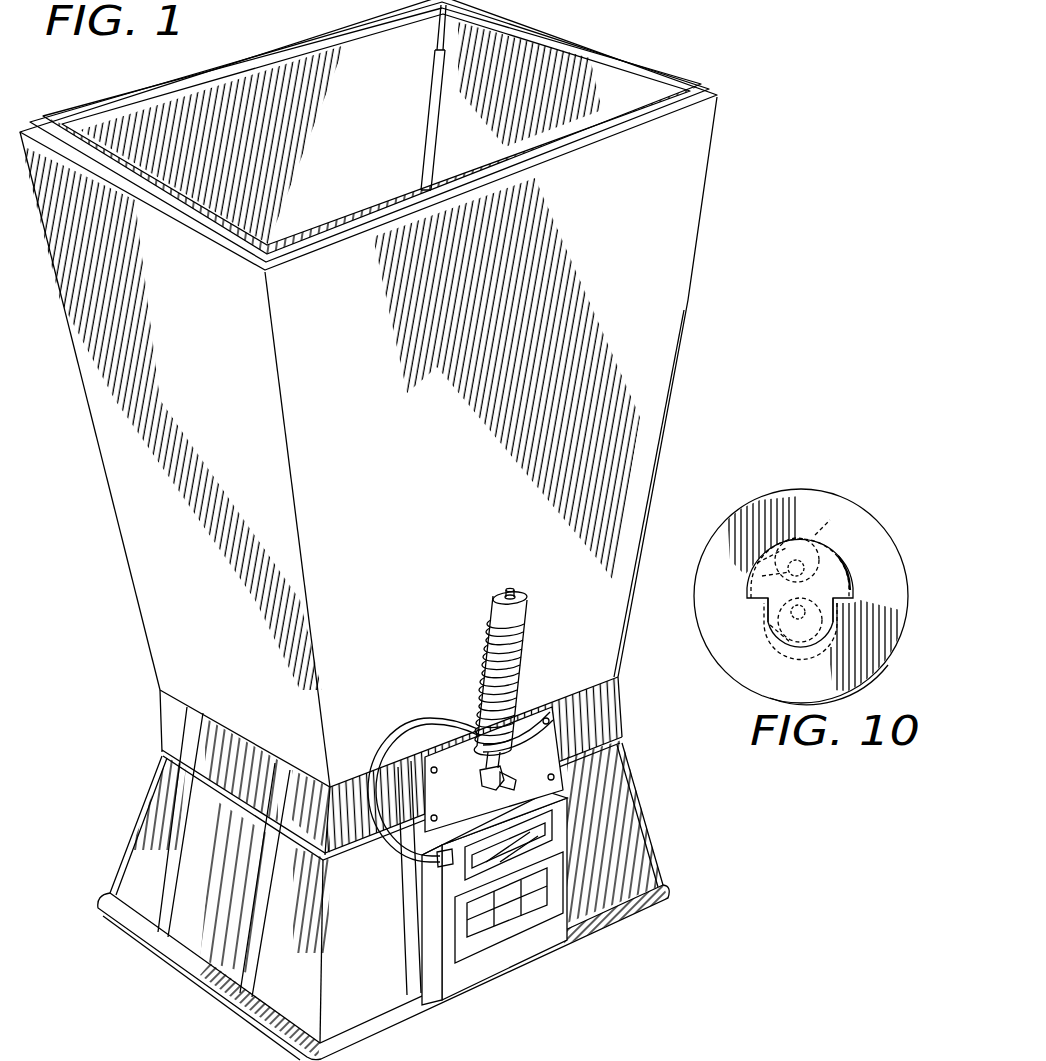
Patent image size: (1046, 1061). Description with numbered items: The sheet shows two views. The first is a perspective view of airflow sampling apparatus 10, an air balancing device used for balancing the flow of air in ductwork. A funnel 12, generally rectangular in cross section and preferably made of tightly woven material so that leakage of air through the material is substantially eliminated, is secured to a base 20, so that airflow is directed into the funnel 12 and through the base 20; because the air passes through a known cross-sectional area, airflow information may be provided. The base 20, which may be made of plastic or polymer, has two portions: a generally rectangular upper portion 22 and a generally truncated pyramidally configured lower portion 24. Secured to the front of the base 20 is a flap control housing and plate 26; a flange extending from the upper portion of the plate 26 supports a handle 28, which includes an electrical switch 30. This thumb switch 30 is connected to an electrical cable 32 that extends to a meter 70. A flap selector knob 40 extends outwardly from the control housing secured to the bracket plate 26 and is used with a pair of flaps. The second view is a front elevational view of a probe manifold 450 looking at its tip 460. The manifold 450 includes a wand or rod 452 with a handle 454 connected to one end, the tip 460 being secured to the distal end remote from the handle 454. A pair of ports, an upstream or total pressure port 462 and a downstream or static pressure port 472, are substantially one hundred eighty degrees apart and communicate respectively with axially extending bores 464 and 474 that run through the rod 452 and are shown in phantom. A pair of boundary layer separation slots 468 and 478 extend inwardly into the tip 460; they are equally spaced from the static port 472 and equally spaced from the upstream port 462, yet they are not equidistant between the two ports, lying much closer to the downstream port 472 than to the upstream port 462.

In FIG. 1, the airflow sampling apparatus 10 is at (134, 643).
In FIG. 1, the funnel 12 is at (113, 436).
In FIG. 1, the base 20 is at (647, 802).
In FIG. 1, the upper portion 22 is at (617, 720).
In FIG. 1, the lower portion 24 is at (400, 988).
In FIG. 1, the flap control housing and plate 26 is at (527, 722).
In FIG. 1, the handle 28 is at (491, 640).
In FIG. 1, the electrical switch 30 is at (512, 592).
In FIG. 1, the electrical cable 32 is at (393, 878).
In FIG. 1, the flap selector knob 40 is at (561, 767).
In FIG. 1, the meter 70 is at (564, 823).
In FIG. 10, the probe manifold 450 is at (701, 536).
In FIG. 10, the wand or rod 452 is at (853, 588).
In FIG. 10, the handle 454 is at (731, 676).
In FIG. 10, the tip 460 is at (837, 558).
In FIG. 10, the upstream or total pressure port 462 is at (823, 512).
In FIG. 10, the axially extending tube or bore 464 is at (757, 563).
In FIG. 10, the boundary layer separation slot 468 is at (857, 617).
In FIG. 10, the downstream or static pressure port 472 is at (801, 656).
In FIG. 10, the axially extending tube or bore 474 is at (770, 625).
In FIG. 10, the boundary layer separation slot 478 is at (767, 610).